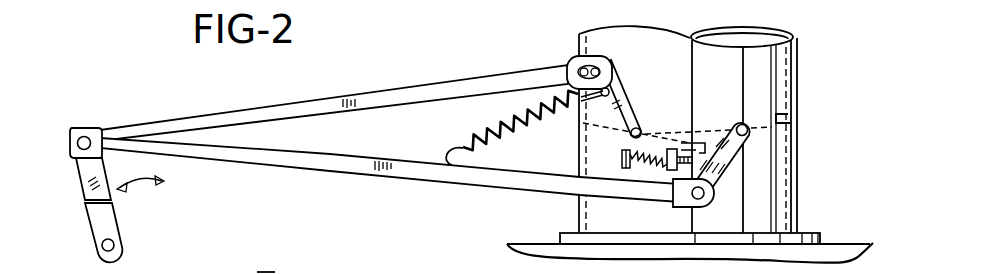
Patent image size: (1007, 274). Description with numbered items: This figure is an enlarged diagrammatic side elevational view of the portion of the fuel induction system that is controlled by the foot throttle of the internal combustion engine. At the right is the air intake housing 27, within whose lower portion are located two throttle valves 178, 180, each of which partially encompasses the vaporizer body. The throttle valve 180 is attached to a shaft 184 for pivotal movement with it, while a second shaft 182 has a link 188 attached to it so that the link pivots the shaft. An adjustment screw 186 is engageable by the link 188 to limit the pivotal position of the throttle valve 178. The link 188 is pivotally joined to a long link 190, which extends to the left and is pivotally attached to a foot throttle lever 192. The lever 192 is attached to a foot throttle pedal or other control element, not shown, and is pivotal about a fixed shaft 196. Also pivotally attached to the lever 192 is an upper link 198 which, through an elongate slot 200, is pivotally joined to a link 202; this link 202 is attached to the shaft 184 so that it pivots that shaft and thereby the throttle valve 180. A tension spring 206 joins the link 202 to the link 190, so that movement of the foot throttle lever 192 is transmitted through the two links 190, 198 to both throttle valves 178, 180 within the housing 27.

The air intake housing 27 is at (255, 273).
The throttle valve 178 is at (778, 114).
The throttle valve 180 is at (590, 137).
The shaft 182 is at (741, 118).
The shaft 184 is at (643, 122).
The adjustment screw 186 is at (636, 168).
The link 188 is at (727, 145).
The link 190 is at (298, 166).
The foot throttle lever 192 is at (97, 214).
The fixed shaft 196 is at (100, 249).
The link 198 is at (349, 99).
The elongate slot 200 is at (577, 62).
The link 202 is at (614, 84).
The tension spring 206 is at (477, 133).